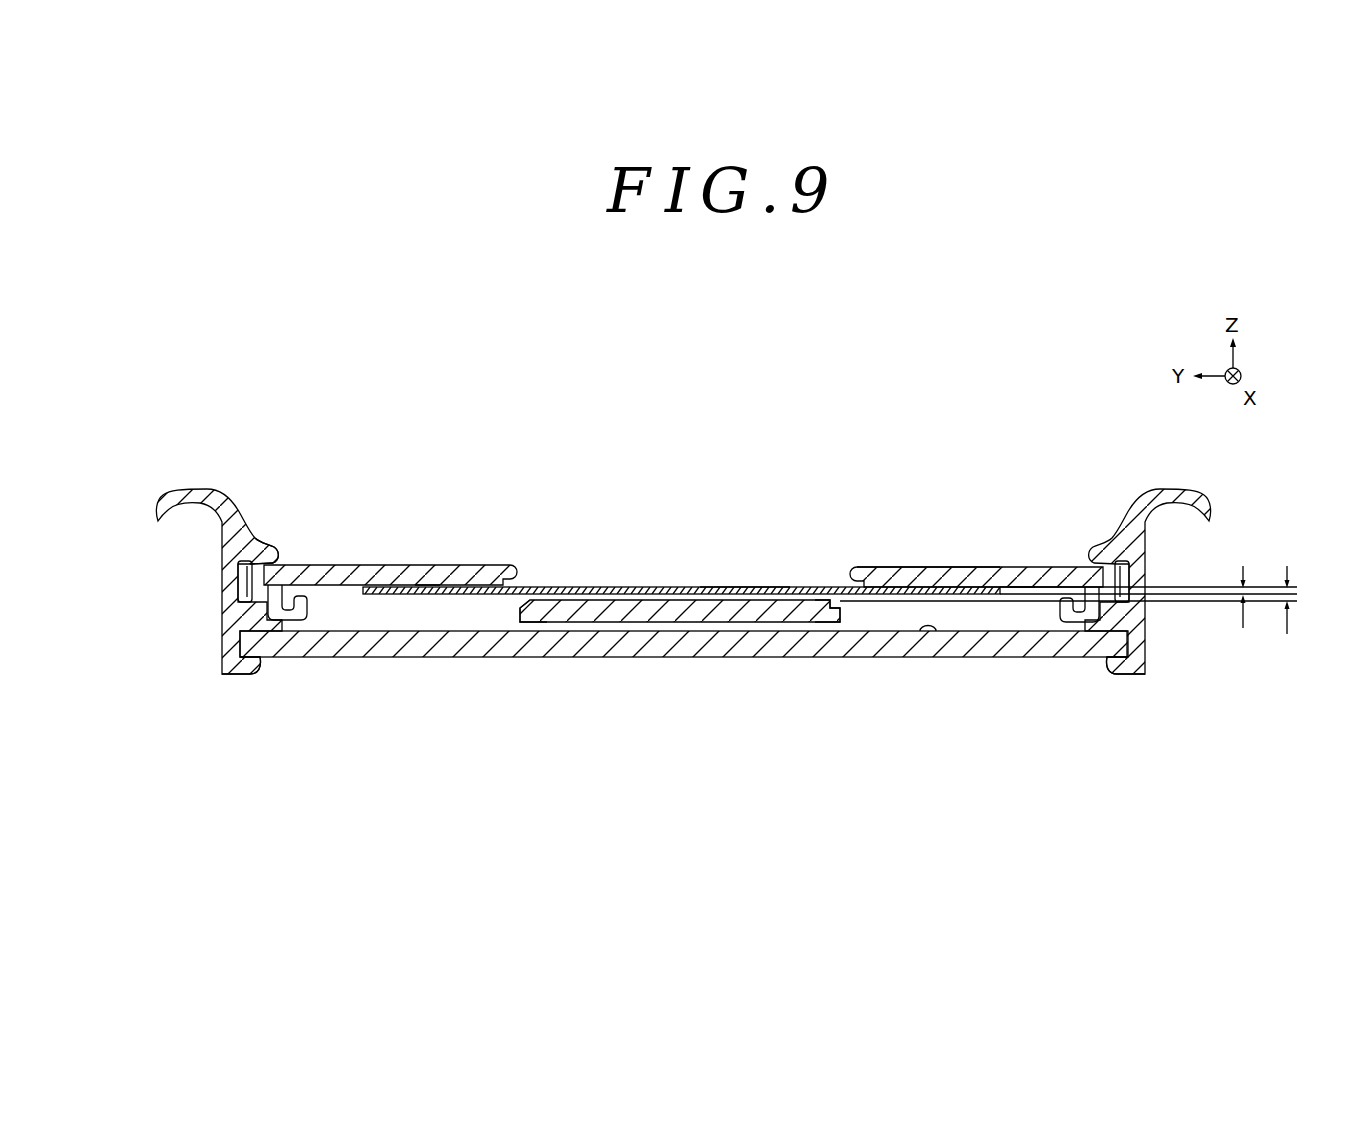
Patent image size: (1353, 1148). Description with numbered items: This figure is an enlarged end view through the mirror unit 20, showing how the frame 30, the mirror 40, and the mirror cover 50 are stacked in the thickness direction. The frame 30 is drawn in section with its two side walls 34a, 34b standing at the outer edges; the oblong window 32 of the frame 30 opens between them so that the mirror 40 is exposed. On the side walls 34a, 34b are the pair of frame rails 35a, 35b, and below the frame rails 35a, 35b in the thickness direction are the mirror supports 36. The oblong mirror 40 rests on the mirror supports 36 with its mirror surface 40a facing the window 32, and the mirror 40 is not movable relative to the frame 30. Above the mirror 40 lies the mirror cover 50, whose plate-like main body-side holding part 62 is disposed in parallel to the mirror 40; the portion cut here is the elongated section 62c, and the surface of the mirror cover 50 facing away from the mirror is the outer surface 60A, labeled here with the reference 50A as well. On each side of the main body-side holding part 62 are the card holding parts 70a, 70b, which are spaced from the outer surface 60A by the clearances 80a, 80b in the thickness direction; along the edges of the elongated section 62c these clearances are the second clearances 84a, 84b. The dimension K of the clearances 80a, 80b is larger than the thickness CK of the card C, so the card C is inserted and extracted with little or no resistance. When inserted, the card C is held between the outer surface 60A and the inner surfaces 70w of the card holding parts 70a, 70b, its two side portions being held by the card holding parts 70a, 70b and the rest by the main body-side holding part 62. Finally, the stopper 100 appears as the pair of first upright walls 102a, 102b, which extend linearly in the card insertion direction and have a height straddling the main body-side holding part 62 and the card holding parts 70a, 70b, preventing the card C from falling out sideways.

The mirror unit 20 is at (267, 448).
The frame 30 is at (1205, 495).
The window 32 is at (280, 552).
The side wall 34a is at (1145, 624).
The side wall 34b is at (222, 617).
The frame rail 35a is at (1100, 620).
The frame rail 35b is at (267, 620).
The mirror support 36 is at (248, 675).
The mirror 40 is at (843, 650).
The mirror surface 40a is at (935, 637).
The mirror cover 50 is at (976, 515).
The bezel plate surface 50A is at (918, 565).
The outer surface 60A is at (710, 598).
The main body-side holding part 62 is at (680, 681).
The elongated section 62c is at (637, 613).
The card holding part 70a is at (1053, 570).
The card holding part 70b is at (385, 567).
The inner surface 70w is at (427, 587).
The clearance 80a is at (855, 560).
The clearance 80b is at (562, 559).
The second clearance 84a is at (843, 592).
The second clearance 84b is at (520, 590).
The stopper 100 is at (683, 707).
The first upright wall 102a is at (1043, 598).
The first upright wall 102b is at (303, 595).
The card C is at (742, 587).
The thickness of the card CK is at (1244, 585).
The dimension of the clearances K is at (1287, 588).